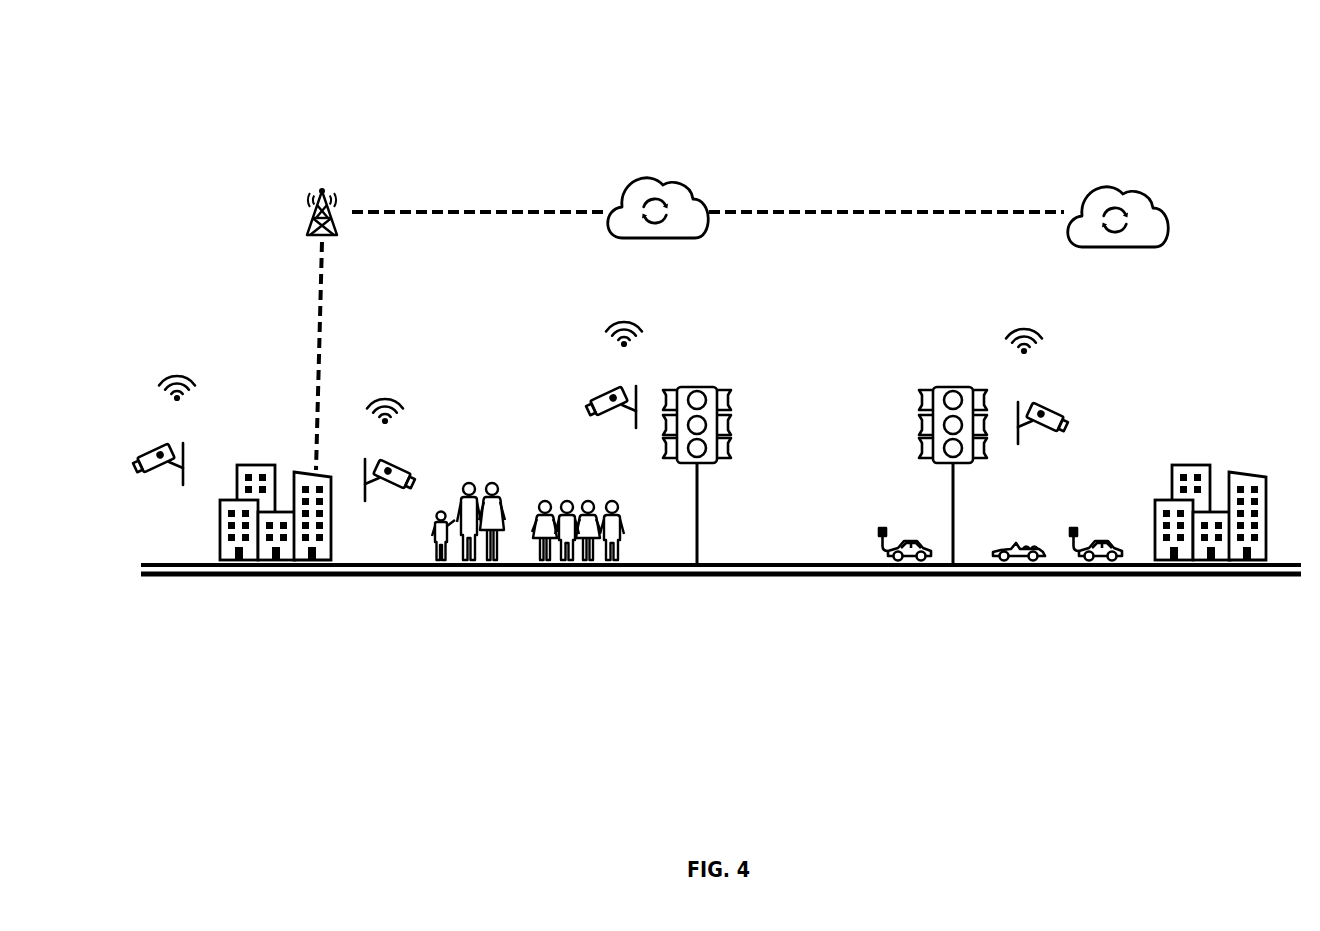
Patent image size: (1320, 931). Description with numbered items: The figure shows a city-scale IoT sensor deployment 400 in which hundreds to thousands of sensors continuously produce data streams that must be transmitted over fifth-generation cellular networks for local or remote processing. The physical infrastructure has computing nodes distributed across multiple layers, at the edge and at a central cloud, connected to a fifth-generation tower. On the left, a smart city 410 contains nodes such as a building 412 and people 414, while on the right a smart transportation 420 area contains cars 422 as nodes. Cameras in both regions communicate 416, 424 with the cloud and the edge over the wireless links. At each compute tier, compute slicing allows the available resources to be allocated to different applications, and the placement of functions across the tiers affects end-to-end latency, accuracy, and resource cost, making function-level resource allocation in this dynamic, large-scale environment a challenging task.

The city-scale deployment 400 is at (787, 68).
The smart city 410 is at (431, 493).
The building 412 is at (292, 617).
The people 414 is at (569, 617).
The camera communication 416 is at (262, 427).
The smart transportation 420 is at (1059, 497).
The cars 422 is at (1060, 617).
The camera communication 424 is at (1098, 362).